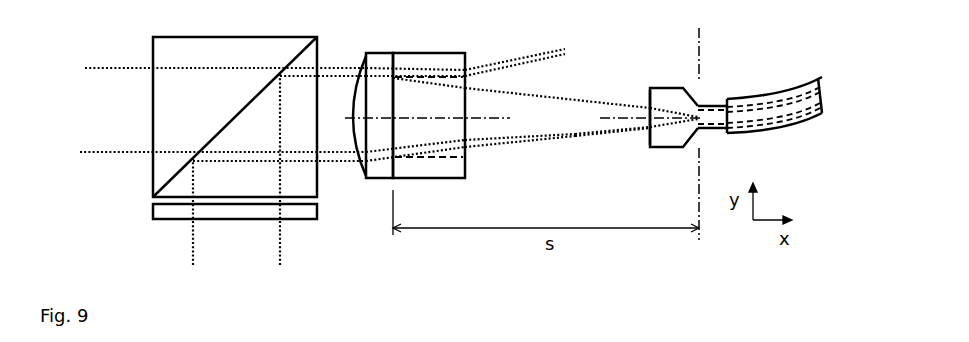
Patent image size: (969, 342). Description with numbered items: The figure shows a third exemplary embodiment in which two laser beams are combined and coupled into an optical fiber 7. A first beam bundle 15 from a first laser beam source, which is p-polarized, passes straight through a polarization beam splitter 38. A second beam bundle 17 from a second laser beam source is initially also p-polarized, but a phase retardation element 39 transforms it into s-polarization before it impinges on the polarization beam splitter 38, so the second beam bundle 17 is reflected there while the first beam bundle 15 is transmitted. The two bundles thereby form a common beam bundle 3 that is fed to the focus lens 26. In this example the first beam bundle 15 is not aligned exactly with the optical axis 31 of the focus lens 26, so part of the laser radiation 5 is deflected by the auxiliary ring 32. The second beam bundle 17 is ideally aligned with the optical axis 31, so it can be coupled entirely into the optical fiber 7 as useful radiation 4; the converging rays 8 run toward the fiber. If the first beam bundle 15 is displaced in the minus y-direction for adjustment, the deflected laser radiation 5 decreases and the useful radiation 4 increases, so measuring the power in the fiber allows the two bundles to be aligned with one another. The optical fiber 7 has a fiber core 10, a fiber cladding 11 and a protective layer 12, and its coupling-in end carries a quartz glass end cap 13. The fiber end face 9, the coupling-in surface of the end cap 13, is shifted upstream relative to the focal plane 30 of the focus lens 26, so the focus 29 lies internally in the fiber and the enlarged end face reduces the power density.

The common beam bundle 3 is at (355, 135).
The useful radiation 4 is at (520, 165).
The deflected laser radiation 5 is at (537, 45).
The optical fiber 7 is at (778, 90).
The converging beam 8 is at (636, 138).
The fiber end face 9 is at (623, 109).
The fiber core 10 is at (789, 115).
The fiber cladding 11 is at (785, 130).
The protective layer 12 is at (778, 150).
The end cap 13 is at (659, 138).
The first beam bundle 15 is at (223, 128).
The second beam bundle 17 is at (238, 172).
The focus lens 26 is at (397, 96).
The focus 29 is at (719, 135).
The focal plane 30 is at (735, 134).
The optical axis 31 is at (522, 92).
The auxiliary ring 32 is at (422, 132).
The polarization beam splitter 38 is at (218, 103).
The phase retardation element 39 is at (198, 223).